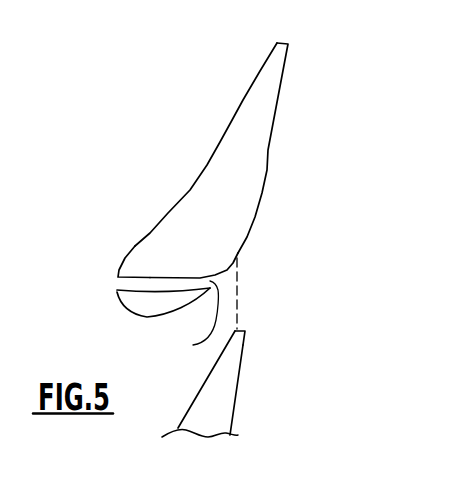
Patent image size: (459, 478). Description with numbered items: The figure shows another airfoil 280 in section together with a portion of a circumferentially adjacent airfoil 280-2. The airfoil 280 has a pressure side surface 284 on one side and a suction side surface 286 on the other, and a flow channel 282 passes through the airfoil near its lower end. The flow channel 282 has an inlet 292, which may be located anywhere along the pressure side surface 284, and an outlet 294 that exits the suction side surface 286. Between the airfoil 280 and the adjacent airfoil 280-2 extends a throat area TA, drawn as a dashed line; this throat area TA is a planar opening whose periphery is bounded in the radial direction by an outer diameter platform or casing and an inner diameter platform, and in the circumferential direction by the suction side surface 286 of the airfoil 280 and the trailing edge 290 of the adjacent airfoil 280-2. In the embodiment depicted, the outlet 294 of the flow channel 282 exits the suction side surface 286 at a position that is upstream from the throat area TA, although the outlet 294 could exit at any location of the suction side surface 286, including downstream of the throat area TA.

The airfoil 280 is at (200, 165).
The flow channel 282 is at (152, 287).
The pressure side surface 284 is at (225, 130).
The suction side surface 286 is at (278, 105).
The trailing edge 290 is at (245, 345).
The inlet 292 is at (112, 273).
The outlet 294 is at (167, 322).
The adjacent airfoil 280-2 is at (260, 370).
The throat area TA is at (237, 288).